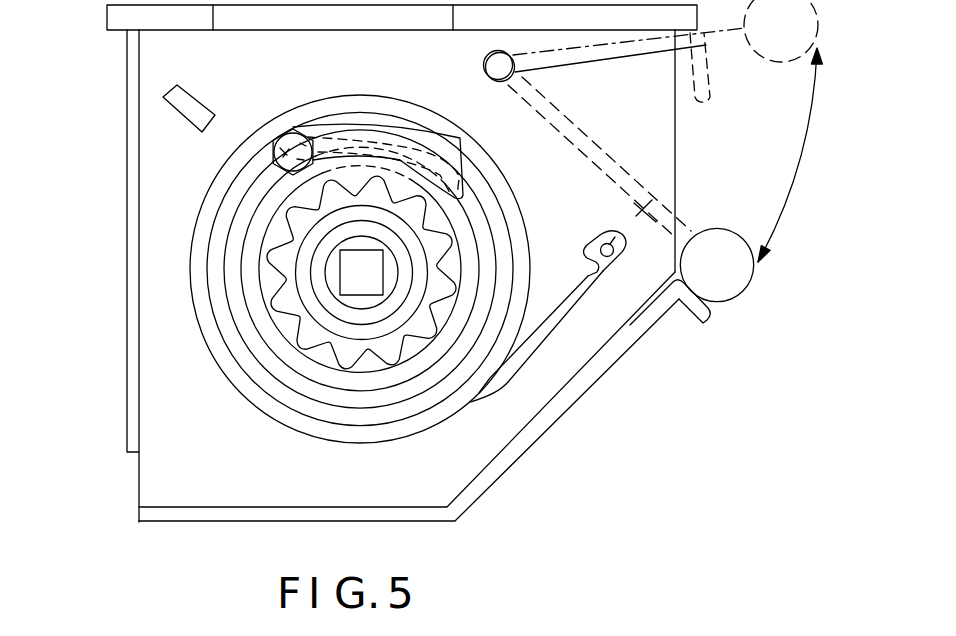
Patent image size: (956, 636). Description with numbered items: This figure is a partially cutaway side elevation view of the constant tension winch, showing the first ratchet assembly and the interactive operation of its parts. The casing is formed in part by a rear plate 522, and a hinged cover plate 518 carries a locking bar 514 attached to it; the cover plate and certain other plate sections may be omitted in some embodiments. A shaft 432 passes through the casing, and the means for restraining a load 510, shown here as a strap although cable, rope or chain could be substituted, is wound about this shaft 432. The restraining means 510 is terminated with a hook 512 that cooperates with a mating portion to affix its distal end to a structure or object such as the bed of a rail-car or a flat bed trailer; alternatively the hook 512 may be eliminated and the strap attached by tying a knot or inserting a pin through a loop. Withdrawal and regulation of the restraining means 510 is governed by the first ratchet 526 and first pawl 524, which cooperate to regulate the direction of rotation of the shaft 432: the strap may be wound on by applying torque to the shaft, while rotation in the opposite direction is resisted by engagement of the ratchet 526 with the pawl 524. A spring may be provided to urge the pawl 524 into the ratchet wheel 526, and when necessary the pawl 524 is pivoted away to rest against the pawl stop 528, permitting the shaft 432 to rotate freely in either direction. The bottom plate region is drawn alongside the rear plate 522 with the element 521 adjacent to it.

The shaft 432 is at (323, 297).
The restraining means 510 is at (547, 333).
The hook 512 is at (608, 278).
The locking bar 514 is at (618, 218).
The hinged cover plate 518 is at (594, 123).
The bottom plate 521 is at (510, 457).
The rear plate 522 is at (128, 216).
The first pawl 524 is at (333, 140).
The first ratchet 526 is at (300, 340).
The pawl stop 528 is at (168, 110).